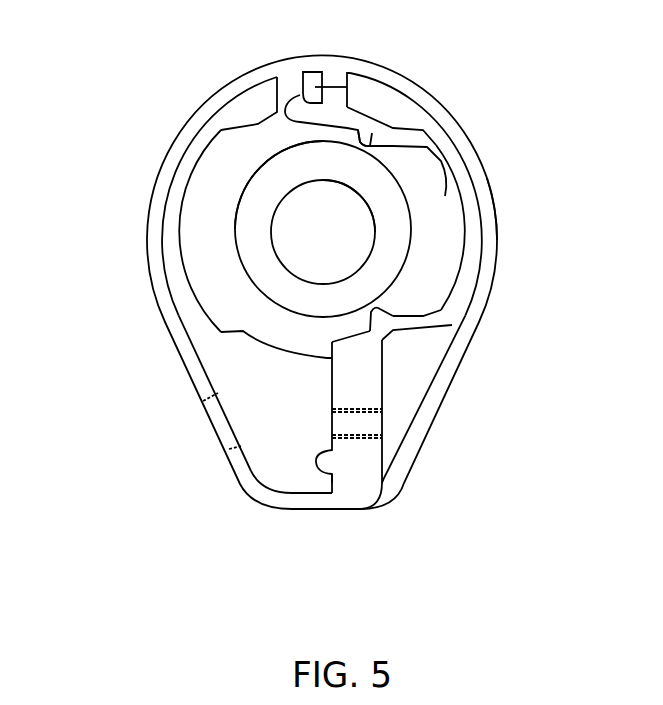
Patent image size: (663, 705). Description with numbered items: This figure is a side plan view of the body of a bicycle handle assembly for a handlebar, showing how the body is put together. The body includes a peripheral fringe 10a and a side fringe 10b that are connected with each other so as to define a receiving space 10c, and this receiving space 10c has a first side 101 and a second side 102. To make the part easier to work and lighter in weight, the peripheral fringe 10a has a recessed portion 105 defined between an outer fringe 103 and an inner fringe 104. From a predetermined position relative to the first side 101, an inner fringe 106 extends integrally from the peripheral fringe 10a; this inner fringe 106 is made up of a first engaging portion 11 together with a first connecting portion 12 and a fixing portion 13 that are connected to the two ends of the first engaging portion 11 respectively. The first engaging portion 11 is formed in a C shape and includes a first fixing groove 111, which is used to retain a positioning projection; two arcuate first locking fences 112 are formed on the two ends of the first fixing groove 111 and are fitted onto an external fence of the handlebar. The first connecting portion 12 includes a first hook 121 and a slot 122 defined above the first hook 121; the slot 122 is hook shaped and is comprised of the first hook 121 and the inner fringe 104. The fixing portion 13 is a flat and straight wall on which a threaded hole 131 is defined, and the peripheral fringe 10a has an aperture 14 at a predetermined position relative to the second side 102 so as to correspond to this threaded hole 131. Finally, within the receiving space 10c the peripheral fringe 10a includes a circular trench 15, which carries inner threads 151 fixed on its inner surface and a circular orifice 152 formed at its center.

The peripheral fringe 10a is at (488, 258).
The side fringe 10b is at (267, 465).
The receiving space 10c is at (233, 297).
The first side 101 is at (437, 249).
The second side 102 is at (168, 238).
The outer fringe 103 is at (500, 222).
The inner fringe 104 is at (332, 473).
The recessed portion 105 is at (450, 318).
The inner fringe 106 is at (380, 370).
The first engaging portion 11 is at (452, 162).
The first fixing groove 111 is at (445, 192).
The first locking fence 112 is at (372, 137).
The first connecting portion 12 is at (298, 87).
The first hook 121 is at (277, 112).
The slot 122 is at (358, 82).
The fixing portion 13 is at (331, 383).
The threaded hole 131 is at (363, 422).
The aperture 14 is at (210, 413).
The circular trench 15 is at (250, 230).
The inner threads 151 is at (237, 205).
The circular orifice 152 is at (300, 202).